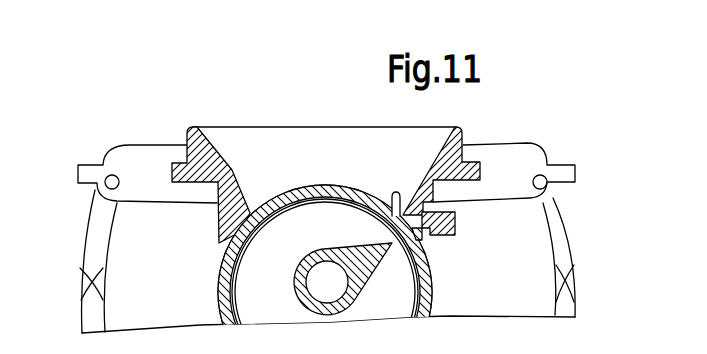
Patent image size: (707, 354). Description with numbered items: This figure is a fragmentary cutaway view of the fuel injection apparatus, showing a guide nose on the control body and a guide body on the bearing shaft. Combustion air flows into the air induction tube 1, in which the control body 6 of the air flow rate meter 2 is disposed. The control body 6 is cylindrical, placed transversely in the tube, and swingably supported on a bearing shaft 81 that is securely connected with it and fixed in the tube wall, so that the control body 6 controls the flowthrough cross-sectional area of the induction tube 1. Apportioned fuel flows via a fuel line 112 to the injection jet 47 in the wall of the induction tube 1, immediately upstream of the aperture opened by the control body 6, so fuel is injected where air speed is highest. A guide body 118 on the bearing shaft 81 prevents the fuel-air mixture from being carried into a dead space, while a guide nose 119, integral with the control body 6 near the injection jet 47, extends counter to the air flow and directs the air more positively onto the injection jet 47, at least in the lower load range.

The air induction tube 1 is at (238, 142).
The air flow rate meter 2 is at (358, 186).
The control body 6 is at (300, 196).
The injection jet 47 is at (427, 245).
The bearing shaft 81 is at (330, 268).
The fuel line 112 is at (455, 222).
The guide body 118 is at (372, 262).
The guide nose 119 is at (396, 191).